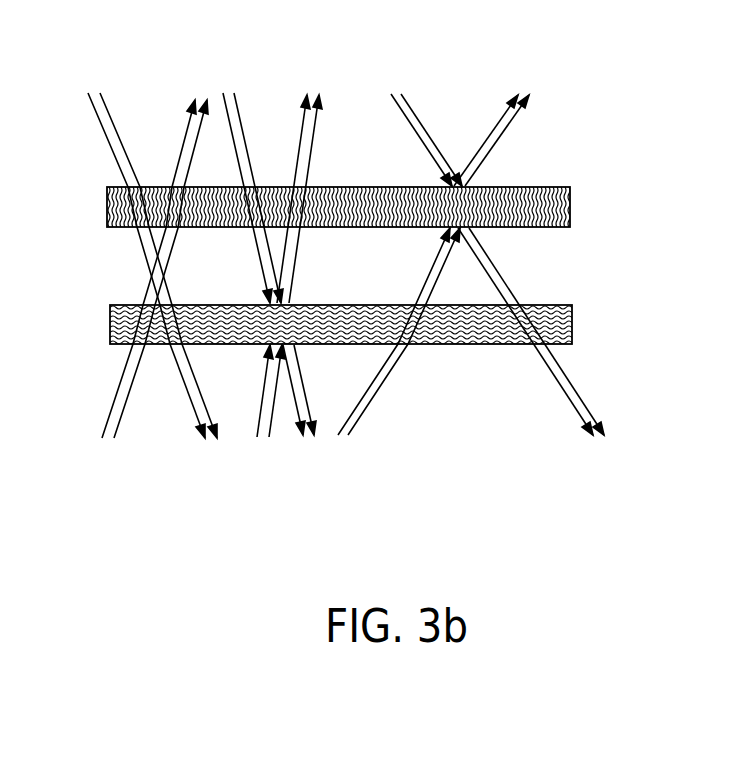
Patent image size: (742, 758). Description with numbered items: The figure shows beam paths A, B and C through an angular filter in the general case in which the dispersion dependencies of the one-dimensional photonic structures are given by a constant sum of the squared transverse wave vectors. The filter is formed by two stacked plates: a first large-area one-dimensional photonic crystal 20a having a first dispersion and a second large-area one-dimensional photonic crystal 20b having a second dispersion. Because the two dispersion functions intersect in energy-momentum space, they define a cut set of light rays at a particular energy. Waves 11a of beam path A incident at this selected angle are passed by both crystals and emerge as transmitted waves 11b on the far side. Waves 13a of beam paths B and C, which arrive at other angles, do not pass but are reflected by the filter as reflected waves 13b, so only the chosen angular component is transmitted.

The incident waves 11a is at (88, 95).
The passed-through waves 11b is at (190, 107).
The incident waves at other angles 13a is at (238, 112).
The reflected waves 13b is at (317, 125).
The first large-area one-dimensional photonic crystal 20a is at (571, 208).
The second large-area one-dimensional photonic crystal 20b is at (573, 323).